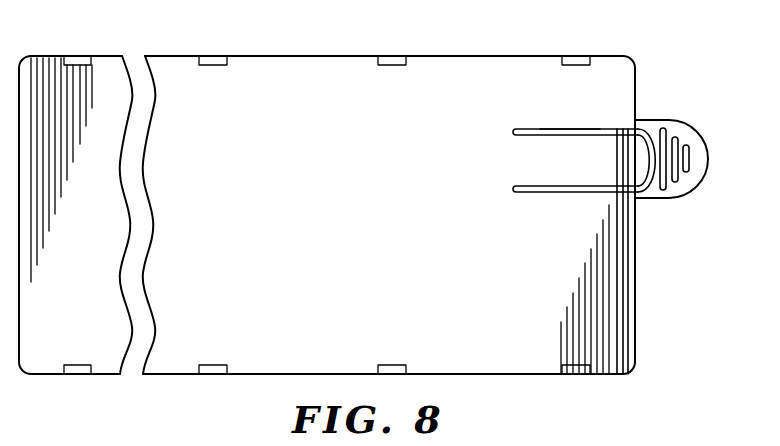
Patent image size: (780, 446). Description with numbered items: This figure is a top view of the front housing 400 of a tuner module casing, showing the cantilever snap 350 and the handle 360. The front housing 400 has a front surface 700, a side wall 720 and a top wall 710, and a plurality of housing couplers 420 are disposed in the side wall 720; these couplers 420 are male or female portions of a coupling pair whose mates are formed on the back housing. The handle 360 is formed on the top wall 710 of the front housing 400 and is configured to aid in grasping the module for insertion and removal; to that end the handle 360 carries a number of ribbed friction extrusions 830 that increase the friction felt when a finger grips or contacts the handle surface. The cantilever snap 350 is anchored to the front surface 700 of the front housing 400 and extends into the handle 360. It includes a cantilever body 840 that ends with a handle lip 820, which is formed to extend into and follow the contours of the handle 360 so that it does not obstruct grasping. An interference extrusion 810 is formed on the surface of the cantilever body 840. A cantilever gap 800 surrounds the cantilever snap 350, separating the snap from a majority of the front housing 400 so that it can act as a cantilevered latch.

The front housing 400 is at (388, 218).
The front surface 700 is at (360, 219).
The side wall 720 is at (458, 56).
The top wall 710 is at (637, 277).
The housing couplers 420 is at (215, 56).
The cantilever snap 350 is at (570, 229).
The cantilever gap 800 is at (570, 142).
The interference extrusion 810 is at (617, 137).
The handle lip 820 is at (643, 134).
The cantilever body 840 is at (564, 129).
The handle 360 is at (696, 150).
The ribbed friction extrusions 830 is at (692, 162).